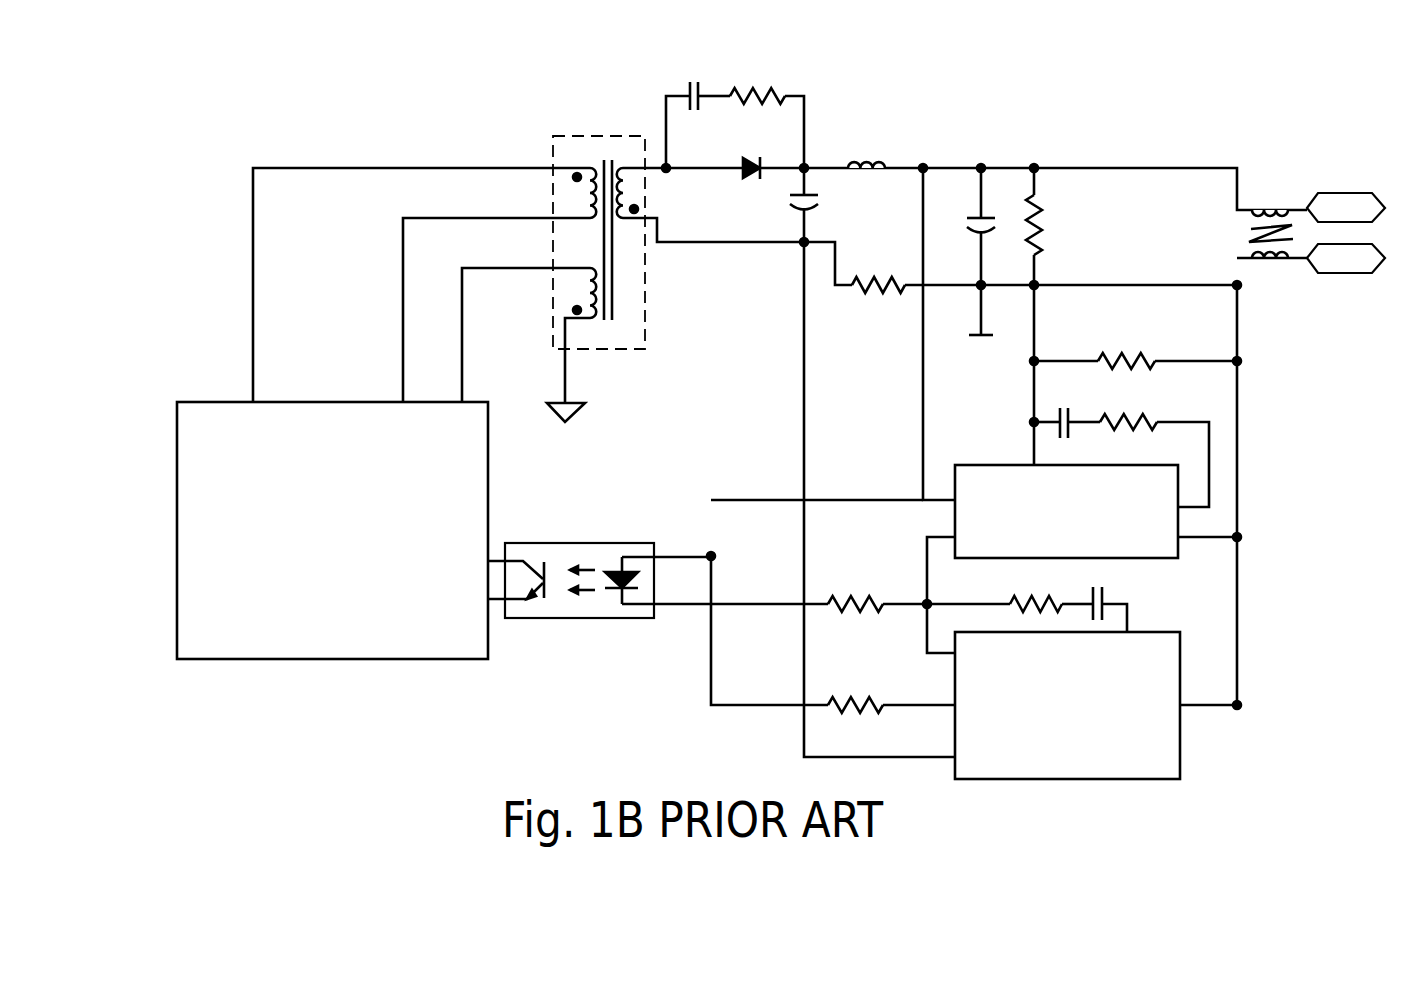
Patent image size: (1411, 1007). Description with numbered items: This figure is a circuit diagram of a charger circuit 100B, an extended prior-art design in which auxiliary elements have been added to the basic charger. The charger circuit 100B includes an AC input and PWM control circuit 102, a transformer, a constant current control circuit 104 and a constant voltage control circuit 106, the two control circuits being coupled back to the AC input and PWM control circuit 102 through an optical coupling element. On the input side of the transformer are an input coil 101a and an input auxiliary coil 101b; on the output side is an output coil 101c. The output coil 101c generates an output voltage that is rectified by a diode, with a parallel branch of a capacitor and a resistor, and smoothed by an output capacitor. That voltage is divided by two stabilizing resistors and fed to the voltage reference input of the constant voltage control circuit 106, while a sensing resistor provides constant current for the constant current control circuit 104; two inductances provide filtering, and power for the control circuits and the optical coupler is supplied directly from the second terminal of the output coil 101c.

The charger circuit 100B is at (1010, 49).
The input coil 101a is at (577, 198).
The input auxiliary coil 101b is at (574, 290).
The output coil 101c is at (627, 188).
The AC input and PWM control circuit 102 is at (387, 645).
The constant current control circuit 104 is at (1180, 524).
The constant voltage control circuit 106 is at (1180, 676).